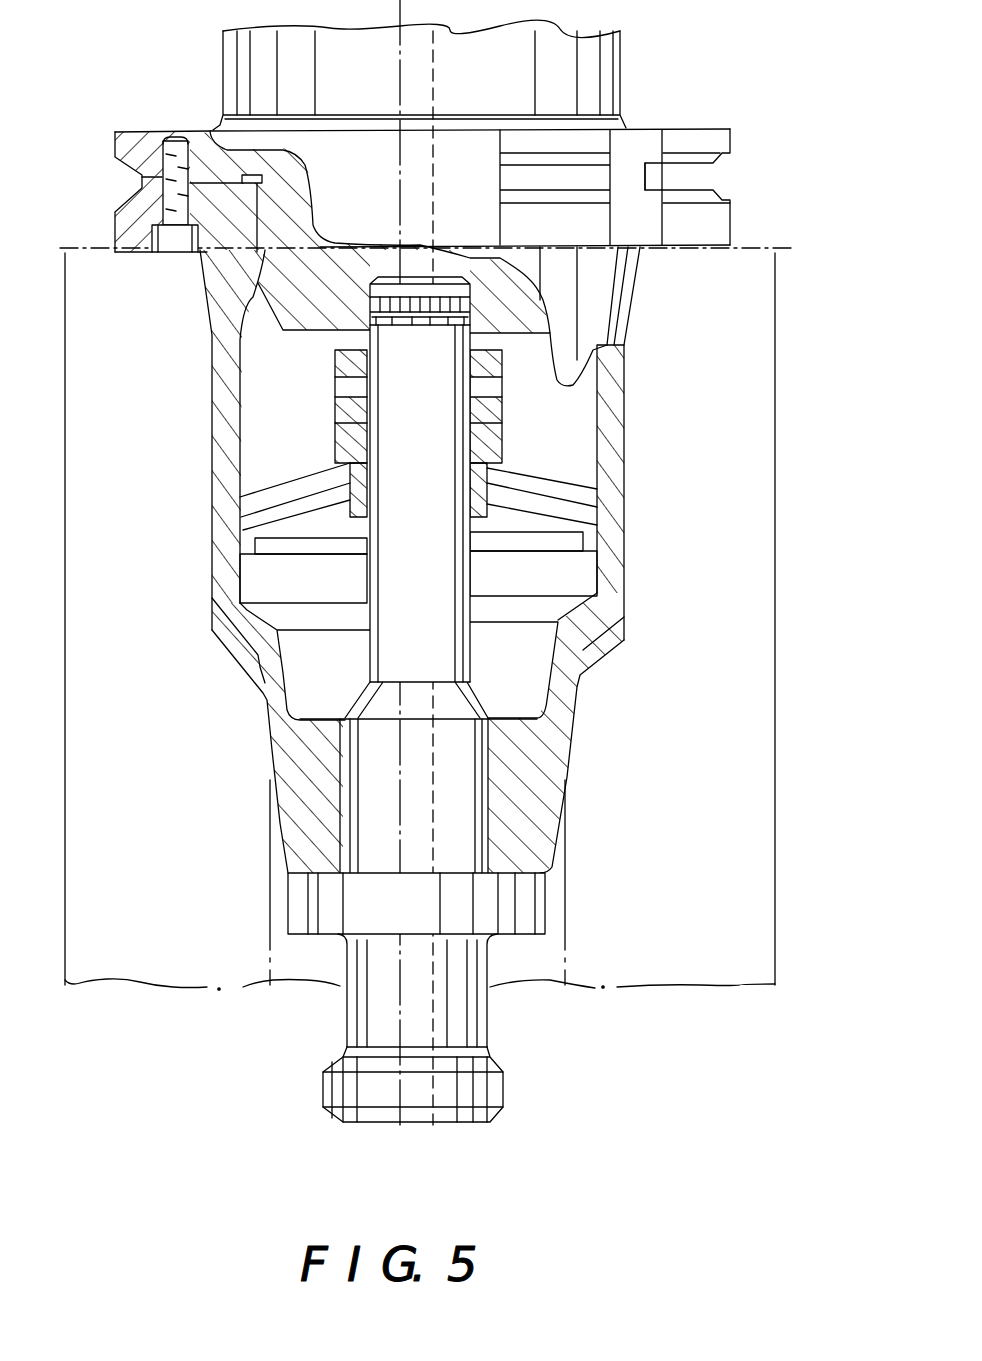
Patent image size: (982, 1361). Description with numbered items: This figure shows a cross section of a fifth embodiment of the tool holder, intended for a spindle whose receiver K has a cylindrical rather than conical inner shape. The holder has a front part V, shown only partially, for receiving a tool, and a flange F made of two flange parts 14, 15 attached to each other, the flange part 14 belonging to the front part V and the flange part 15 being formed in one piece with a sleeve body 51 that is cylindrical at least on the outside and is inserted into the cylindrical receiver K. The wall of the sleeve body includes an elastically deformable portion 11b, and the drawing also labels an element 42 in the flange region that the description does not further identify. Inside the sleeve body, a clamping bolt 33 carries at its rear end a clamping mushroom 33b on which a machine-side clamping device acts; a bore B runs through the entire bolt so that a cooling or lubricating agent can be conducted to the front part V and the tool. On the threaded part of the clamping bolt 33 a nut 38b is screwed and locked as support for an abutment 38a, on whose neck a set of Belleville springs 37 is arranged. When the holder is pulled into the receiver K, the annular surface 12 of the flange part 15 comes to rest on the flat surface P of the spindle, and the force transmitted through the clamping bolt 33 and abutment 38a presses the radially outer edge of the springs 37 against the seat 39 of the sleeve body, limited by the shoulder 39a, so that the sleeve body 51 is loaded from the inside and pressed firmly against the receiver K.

The flange part 14 is at (137, 155).
The flange part 15 is at (132, 220).
The hub body 42 is at (283, 283).
The receiver K is at (415, 445).
The sleeve body 51 is at (217, 427).
The seat 39 is at (240, 515).
The shoulder 39a is at (253, 553).
The bore B is at (430, 787).
The clamping bolt 33 is at (450, 648).
The clamping mushroom 33b is at (467, 997).
The nut 38b is at (503, 430).
The abutment 38a is at (522, 432).
The elastically deformable portion 11b is at (633, 480).
The set of Belleville springs 37 is at (597, 507).
The annular surface 12 is at (743, 209).
The flat surface P is at (767, 233).
The flange F is at (478, 233).
The front part V is at (517, 62).